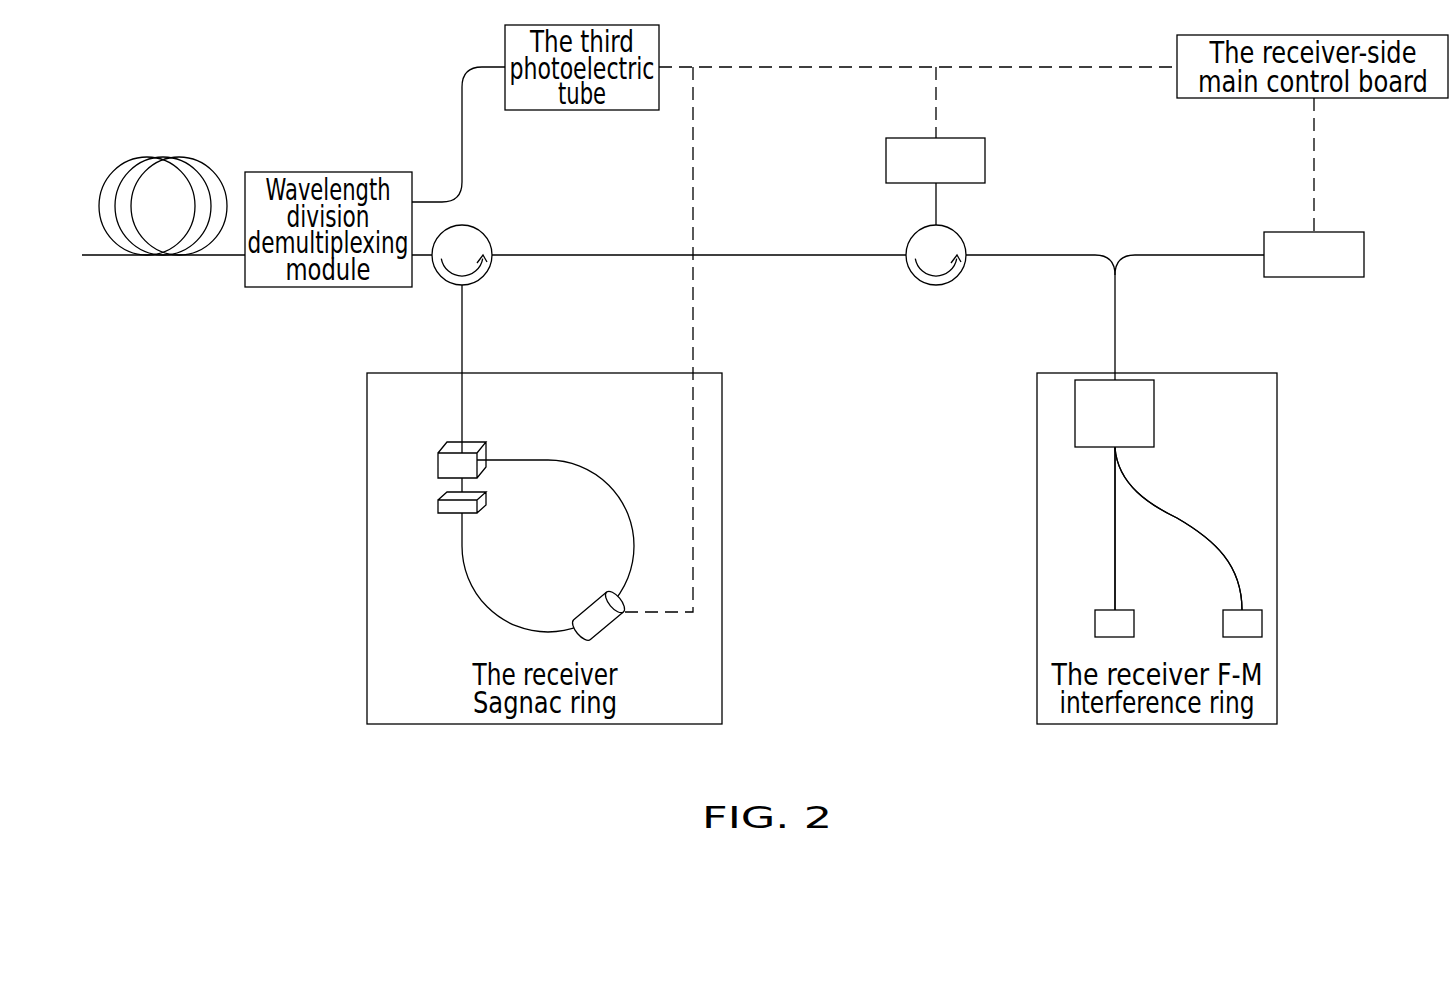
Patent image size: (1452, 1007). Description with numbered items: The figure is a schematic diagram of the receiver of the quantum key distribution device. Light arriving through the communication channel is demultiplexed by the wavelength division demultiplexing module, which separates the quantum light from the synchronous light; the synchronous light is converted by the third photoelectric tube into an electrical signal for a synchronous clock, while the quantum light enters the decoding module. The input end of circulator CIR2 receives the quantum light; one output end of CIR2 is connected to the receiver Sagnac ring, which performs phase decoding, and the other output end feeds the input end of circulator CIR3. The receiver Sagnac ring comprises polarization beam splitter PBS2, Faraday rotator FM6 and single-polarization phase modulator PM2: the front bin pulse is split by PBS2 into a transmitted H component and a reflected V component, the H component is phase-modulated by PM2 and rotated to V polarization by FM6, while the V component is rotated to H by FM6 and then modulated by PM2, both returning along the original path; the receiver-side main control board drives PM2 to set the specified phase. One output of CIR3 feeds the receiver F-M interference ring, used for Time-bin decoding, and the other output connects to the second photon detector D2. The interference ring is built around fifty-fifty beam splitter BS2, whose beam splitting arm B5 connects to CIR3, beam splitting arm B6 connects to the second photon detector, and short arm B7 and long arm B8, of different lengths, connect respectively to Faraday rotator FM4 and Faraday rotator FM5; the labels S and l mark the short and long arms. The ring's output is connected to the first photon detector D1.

The circulator CIR2 is at (476, 239).
The circulator CIR3 is at (950, 238).
The first photon detector D1 is at (935, 181).
The second photon detector D2 is at (1314, 254).
The beam splitting arm B5 is at (1040, 317).
The beam splitting arm B6 is at (1189, 279).
The 50:50 beam splitter BS2 is at (1114, 413).
The beam splitting arm B7 is at (1092, 528).
The beam splitting arm B8 is at (1181, 529).
The short arm length S is at (1095, 528).
The long arm length l is at (1179, 529).
The Faraday rotator FM4 is at (1089, 626).
The Faraday rotator FM5 is at (1217, 626).
The Faraday rotator FM6 is at (436, 506).
The polarization beam splitter PBS2 is at (429, 463).
The single-polarization phase modulator PM2 is at (613, 621).